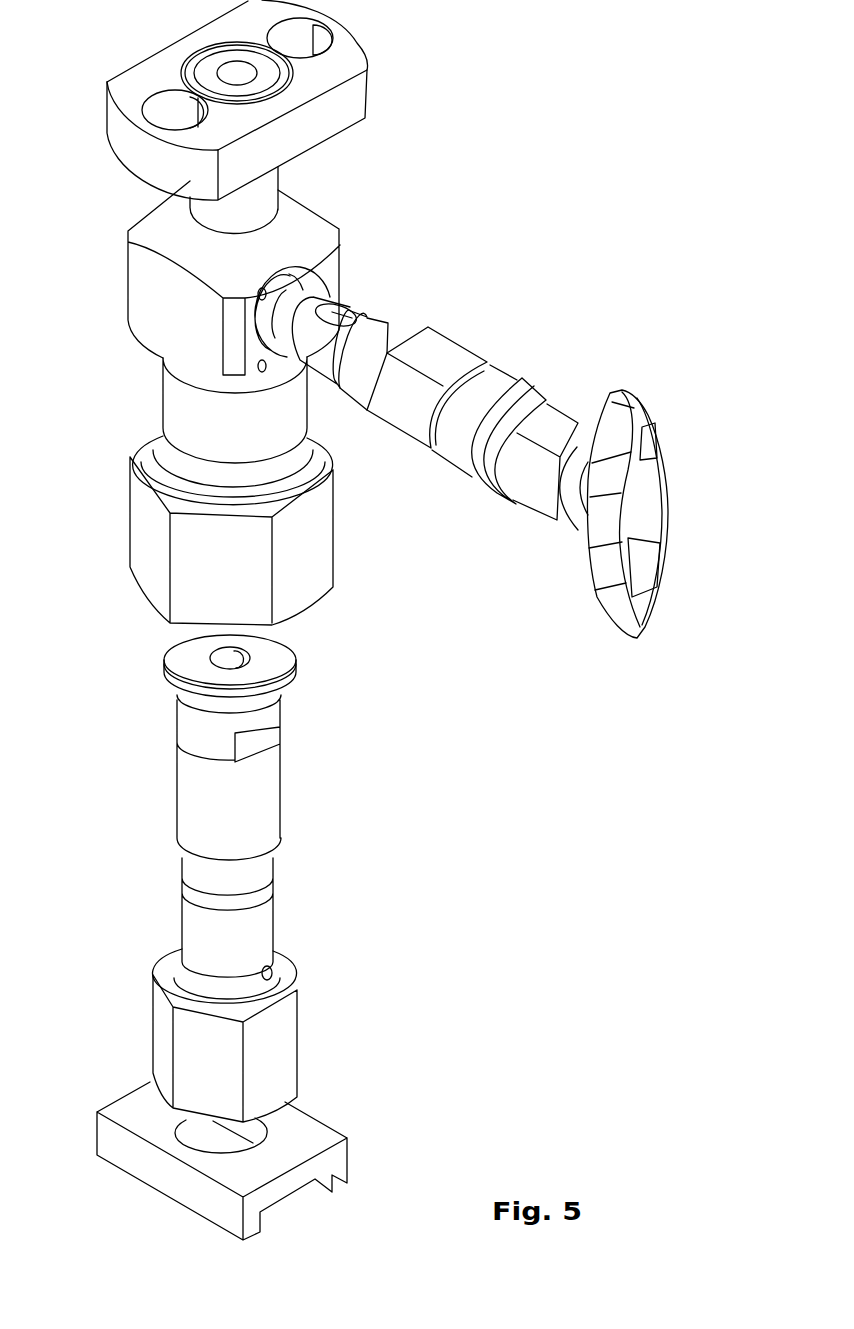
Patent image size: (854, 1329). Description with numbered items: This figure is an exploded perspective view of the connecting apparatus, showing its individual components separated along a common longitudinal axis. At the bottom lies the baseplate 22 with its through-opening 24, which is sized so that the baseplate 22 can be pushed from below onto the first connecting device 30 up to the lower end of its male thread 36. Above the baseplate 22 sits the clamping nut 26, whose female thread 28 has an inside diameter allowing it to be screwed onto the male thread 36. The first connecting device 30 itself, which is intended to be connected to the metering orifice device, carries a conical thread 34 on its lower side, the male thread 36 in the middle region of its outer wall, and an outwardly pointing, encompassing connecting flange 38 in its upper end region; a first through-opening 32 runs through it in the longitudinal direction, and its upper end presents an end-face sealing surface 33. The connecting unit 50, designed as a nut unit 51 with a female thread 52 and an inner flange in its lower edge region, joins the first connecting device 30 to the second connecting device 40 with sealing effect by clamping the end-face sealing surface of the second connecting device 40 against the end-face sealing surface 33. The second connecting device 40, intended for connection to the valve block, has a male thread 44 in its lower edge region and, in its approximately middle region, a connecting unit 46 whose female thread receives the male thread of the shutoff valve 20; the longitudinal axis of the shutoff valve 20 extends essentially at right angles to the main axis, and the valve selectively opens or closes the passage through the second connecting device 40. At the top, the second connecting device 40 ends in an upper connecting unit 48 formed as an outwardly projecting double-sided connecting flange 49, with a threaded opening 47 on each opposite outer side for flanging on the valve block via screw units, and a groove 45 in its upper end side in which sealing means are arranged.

The shutoff valve 20 is at (517, 375).
The baseplate 22 is at (340, 1158).
The through-opening 24 is at (262, 1125).
The clamping nut 26 is at (285, 1058).
The female thread 28 is at (268, 960).
The first connecting device 30 is at (315, 836).
The first through-opening 32 is at (251, 654).
The end-face sealing surface 33 is at (182, 658).
The conical thread 34 is at (257, 928).
The male thread 36 is at (262, 815).
The connecting flange 38 is at (300, 668).
The second connecting device 40 is at (380, 236).
The male thread 44 is at (172, 400).
The groove 45 is at (190, 72).
The connecting unit 46 is at (305, 284).
The threaded opening 47 is at (318, 36).
The upper connecting unit 48 is at (250, 116).
The connecting flange 49 is at (329, 118).
The connecting unit 50 is at (284, 530).
The nut unit 51 is at (328, 518).
The female thread 52 is at (290, 463).